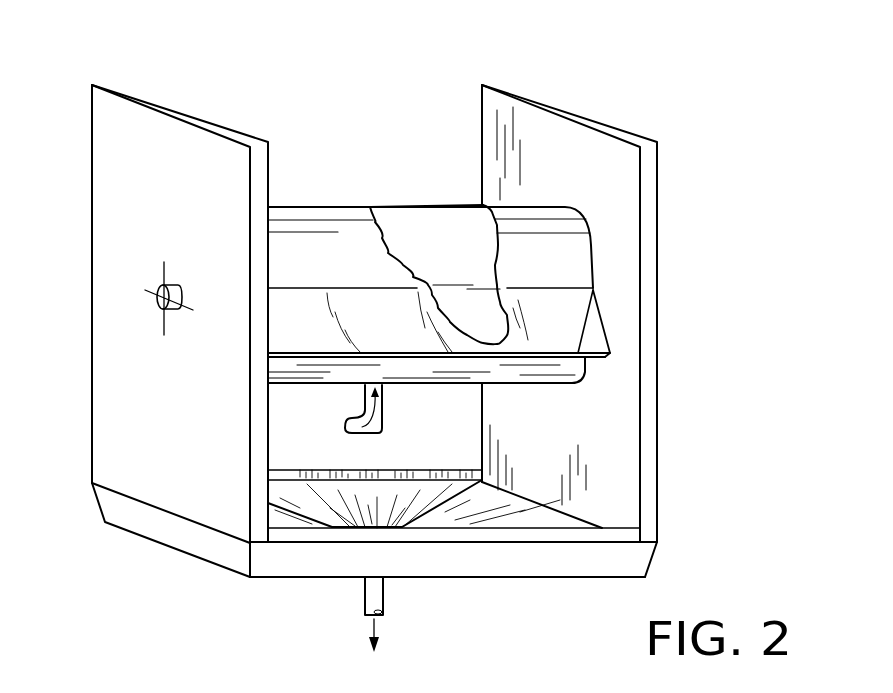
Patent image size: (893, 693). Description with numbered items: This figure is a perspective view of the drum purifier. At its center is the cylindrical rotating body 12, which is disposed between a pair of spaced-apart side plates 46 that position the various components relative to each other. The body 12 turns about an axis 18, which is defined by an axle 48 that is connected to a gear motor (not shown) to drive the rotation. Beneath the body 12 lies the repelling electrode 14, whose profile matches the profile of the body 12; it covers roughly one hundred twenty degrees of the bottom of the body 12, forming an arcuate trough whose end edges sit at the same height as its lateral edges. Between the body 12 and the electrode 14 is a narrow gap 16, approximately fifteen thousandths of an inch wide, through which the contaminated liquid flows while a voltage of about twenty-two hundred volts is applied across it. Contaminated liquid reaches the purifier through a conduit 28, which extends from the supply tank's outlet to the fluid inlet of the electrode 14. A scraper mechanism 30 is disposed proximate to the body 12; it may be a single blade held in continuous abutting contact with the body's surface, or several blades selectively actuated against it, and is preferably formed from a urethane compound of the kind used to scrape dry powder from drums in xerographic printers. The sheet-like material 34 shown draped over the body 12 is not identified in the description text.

The rotating body 12 is at (328, 220).
The electrode 14 is at (600, 370).
The gap 16 is at (538, 382).
The axis 18 is at (160, 288).
The conduit 28 is at (385, 410).
The scraper mechanism 30 is at (603, 337).
The sheet material 34 is at (432, 220).
The side plates 46 is at (177, 112).
The axle 48 is at (183, 290).